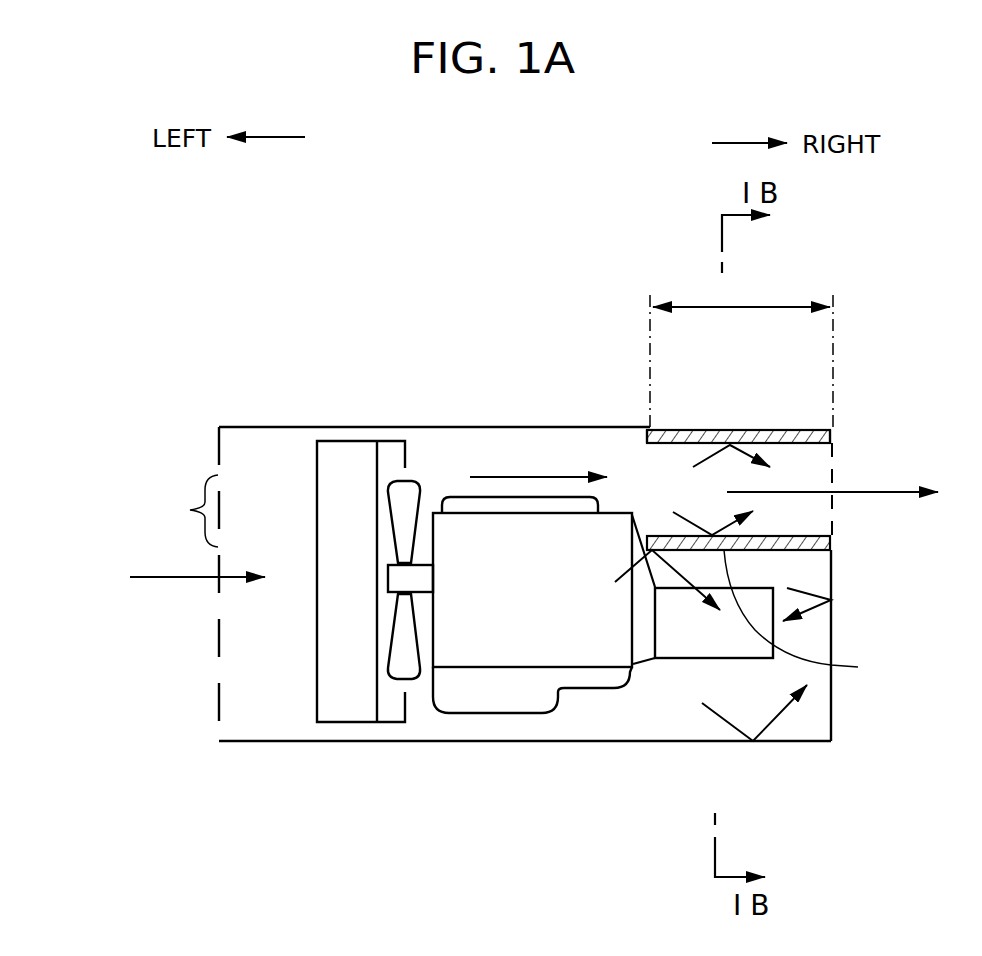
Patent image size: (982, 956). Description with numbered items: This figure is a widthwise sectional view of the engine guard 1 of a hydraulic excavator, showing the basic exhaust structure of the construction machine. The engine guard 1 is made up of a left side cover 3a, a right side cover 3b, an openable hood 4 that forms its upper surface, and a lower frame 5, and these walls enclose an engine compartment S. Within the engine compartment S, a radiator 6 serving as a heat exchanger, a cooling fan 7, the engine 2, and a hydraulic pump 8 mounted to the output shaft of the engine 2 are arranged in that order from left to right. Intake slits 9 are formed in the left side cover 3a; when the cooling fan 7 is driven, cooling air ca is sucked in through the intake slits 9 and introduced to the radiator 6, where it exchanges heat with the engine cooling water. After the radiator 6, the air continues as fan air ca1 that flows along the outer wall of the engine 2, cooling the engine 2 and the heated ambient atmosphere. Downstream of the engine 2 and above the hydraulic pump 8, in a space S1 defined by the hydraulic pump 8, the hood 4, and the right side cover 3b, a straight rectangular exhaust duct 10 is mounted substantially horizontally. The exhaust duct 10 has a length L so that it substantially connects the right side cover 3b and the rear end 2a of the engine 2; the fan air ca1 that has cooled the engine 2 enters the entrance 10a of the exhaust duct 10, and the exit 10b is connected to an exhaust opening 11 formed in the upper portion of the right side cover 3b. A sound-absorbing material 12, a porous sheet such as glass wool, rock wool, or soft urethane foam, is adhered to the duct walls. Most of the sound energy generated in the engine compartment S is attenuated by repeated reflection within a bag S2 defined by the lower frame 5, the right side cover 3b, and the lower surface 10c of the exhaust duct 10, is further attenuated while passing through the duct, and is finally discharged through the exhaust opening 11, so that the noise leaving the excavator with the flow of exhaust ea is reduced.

The engine guard 1 is at (453, 410).
The engine 2 is at (499, 640).
The rear end of the engine 2a is at (648, 510).
The left side cover 3a is at (218, 443).
The right side cover 3b is at (831, 620).
The hood 4 is at (556, 426).
The lower frame 5 is at (410, 743).
The radiator 6 is at (351, 457).
The cooling fan 7 is at (424, 478).
The hydraulic pump 8 is at (688, 648).
The intake slits 9 is at (190, 510).
The exhaust duct 10 is at (723, 425).
The entrance of the exhaust duct 10a is at (650, 473).
The exit of the exhaust duct 10b is at (822, 473).
The lower surface of the exhaust duct 10c is at (823, 619).
The exhaust opening 11 is at (836, 486).
The sound-absorbing material 12 is at (830, 441).
The length of the exhaust duct L is at (741, 354).
The engine compartment S is at (643, 675).
The space S1 is at (753, 568).
The bag S2 is at (805, 717).
The cooling air ca is at (155, 581).
The fan air ca1 is at (503, 475).
The exhaust ea is at (893, 494).